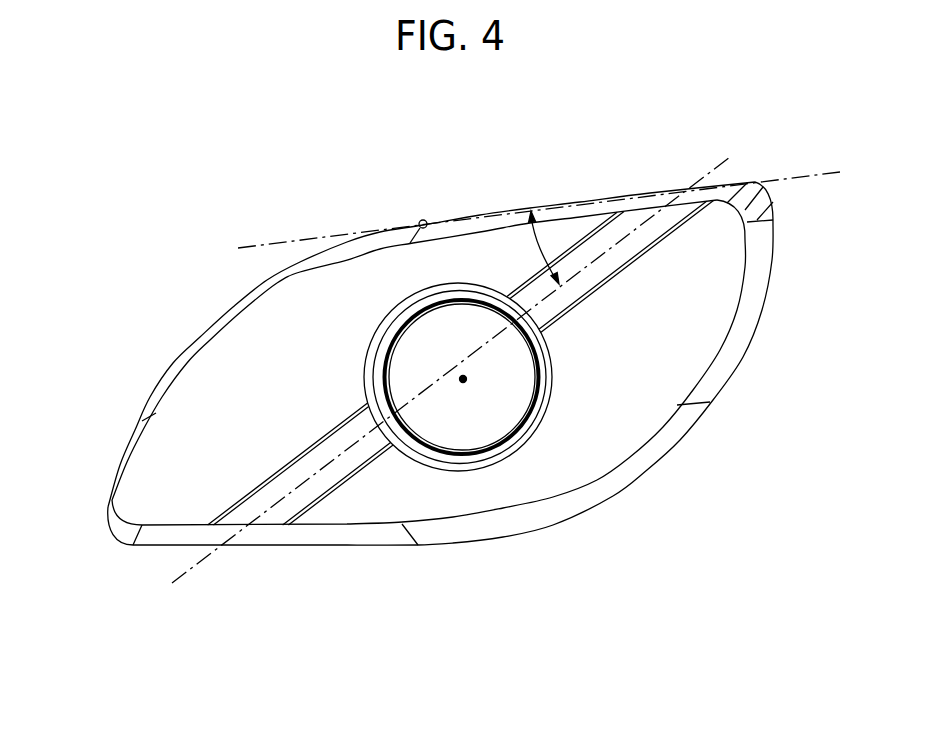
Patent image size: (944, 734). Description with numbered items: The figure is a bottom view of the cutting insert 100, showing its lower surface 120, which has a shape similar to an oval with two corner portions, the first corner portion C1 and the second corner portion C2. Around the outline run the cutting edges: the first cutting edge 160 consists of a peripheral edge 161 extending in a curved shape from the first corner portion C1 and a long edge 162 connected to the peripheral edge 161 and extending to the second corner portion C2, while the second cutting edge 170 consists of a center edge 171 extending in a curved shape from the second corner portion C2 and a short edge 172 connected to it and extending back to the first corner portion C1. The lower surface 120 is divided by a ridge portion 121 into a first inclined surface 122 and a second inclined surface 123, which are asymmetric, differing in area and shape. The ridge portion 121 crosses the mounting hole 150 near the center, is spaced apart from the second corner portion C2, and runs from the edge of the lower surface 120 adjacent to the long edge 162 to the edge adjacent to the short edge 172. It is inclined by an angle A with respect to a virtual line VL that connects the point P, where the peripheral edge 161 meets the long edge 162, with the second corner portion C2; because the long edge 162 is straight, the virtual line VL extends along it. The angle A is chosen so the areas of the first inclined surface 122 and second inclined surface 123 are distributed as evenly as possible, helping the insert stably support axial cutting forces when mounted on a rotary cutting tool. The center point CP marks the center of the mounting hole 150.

The cutting insert 100 is at (161, 233).
The lower surface 120 is at (368, 290).
The ridge portion 121 is at (289, 502).
The first inclined surface 122 is at (222, 363).
The second inclined surface 123 is at (598, 445).
The mounting hole 150 is at (468, 431).
The first cutting edge 160 is at (398, 128).
The peripheral edge 161 is at (308, 258).
The long edge 162 is at (487, 213).
The second cutting edge 170 is at (523, 638).
The center edge 171 is at (554, 528).
The short edge 172 is at (367, 548).
The point P is at (416, 218).
The angle A is at (538, 247).
The virtual line VL is at (800, 172).
The first corner portion C1 is at (103, 536).
The second corner portion C2 is at (778, 194).
The center point CP is at (480, 396).